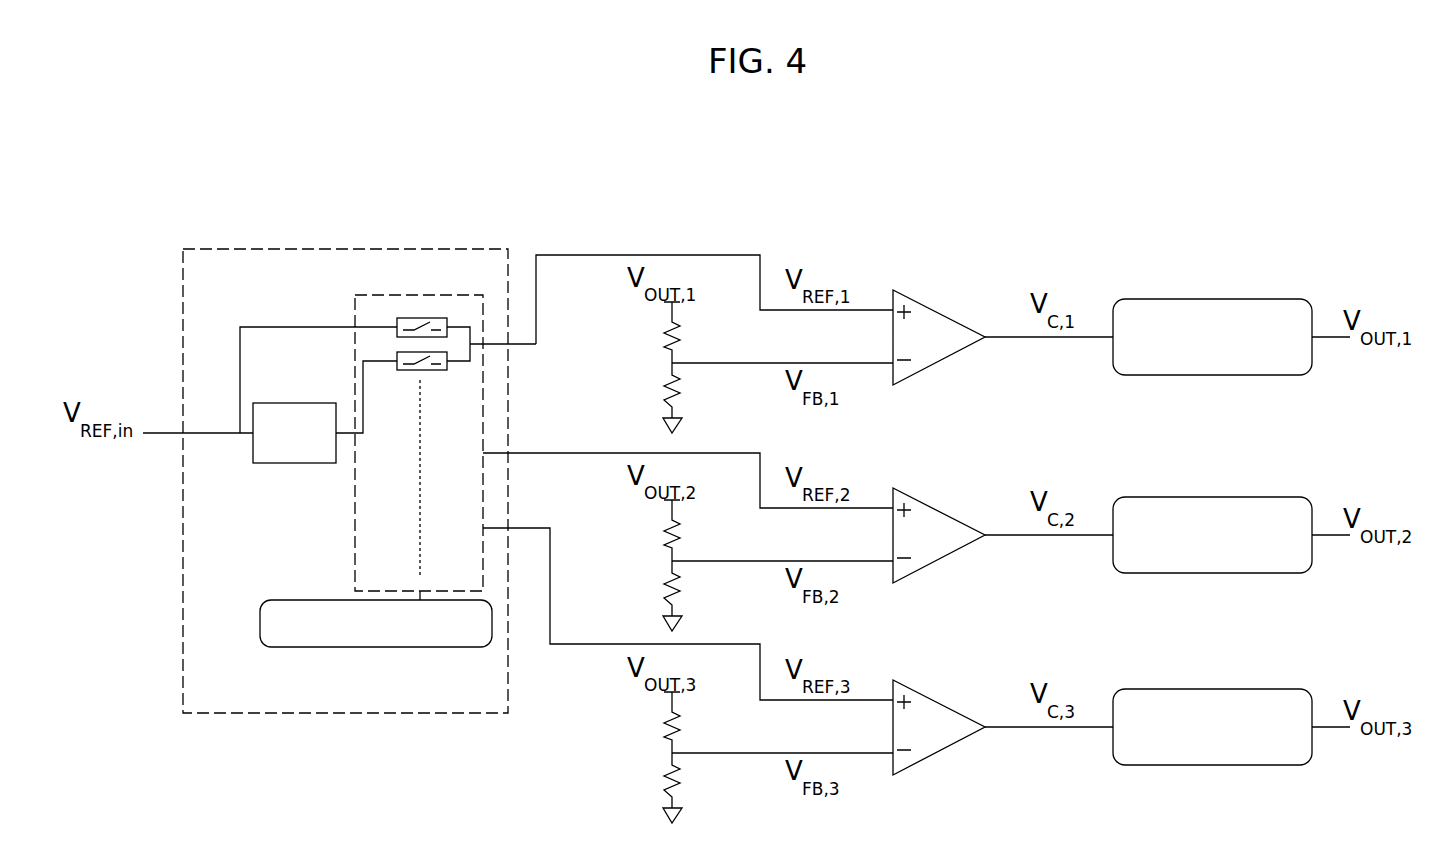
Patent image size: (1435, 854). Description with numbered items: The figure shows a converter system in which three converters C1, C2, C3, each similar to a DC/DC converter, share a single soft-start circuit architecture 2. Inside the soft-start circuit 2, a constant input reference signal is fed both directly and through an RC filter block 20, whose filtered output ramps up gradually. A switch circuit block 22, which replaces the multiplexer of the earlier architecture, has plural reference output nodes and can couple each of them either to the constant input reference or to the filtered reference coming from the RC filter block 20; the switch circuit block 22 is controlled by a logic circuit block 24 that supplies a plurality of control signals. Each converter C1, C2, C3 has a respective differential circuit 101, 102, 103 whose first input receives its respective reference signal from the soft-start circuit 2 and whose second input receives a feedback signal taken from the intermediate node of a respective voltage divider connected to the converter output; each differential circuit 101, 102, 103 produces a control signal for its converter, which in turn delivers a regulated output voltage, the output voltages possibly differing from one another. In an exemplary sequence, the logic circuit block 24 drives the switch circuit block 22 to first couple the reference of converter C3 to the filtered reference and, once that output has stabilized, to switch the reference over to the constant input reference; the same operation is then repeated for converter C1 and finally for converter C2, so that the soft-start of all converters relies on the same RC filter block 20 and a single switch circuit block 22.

The soft-start circuit architecture 2 is at (237, 258).
The RC filter block 20 is at (288, 453).
The switch circuit block 22 is at (357, 541).
The logic circuit block 24 is at (307, 640).
The differential circuit 101 is at (948, 328).
The differential circuit 102 is at (951, 514).
The differential circuit 103 is at (951, 706).
The converter C1 is at (1167, 320).
The converter C2 is at (1212, 502).
The converter C3 is at (1212, 694).